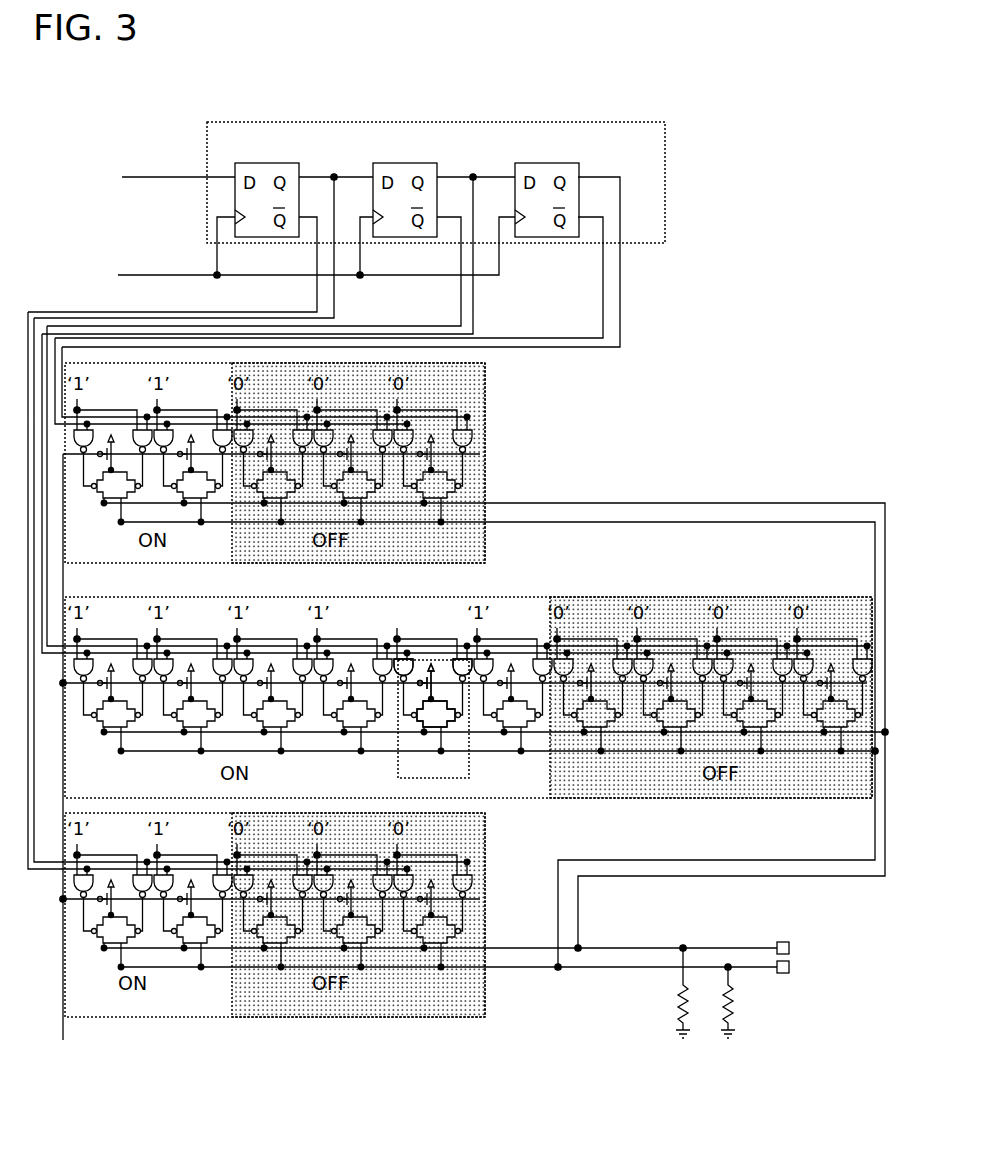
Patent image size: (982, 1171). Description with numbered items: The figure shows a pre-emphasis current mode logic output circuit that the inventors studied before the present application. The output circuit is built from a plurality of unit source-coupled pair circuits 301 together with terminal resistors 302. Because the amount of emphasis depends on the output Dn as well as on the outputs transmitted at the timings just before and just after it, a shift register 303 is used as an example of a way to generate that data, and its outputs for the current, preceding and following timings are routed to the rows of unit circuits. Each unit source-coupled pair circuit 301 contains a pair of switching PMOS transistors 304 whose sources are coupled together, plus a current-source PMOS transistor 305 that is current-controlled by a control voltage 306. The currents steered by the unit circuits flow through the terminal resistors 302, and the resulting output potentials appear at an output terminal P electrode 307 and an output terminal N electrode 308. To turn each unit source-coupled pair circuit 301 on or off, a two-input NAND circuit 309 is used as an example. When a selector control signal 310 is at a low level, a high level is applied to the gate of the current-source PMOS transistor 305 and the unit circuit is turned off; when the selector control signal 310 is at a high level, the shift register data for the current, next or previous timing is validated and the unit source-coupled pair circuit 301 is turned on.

The unit source-coupled pair circuit 301 is at (429, 780).
The terminal resistor 302 is at (678, 1006).
The shift register 303 is at (400, 152).
The switching PMOS transistor 304 is at (427, 722).
The current-source PMOS transistor 305 is at (417, 695).
The control voltage 306 is at (63, 1028).
The output terminal P electrode 307 is at (790, 948).
The output terminal N electrode 308 is at (790, 968).
The two-input NAND circuit 309 is at (460, 655).
The selector control signal 310 is at (392, 607).